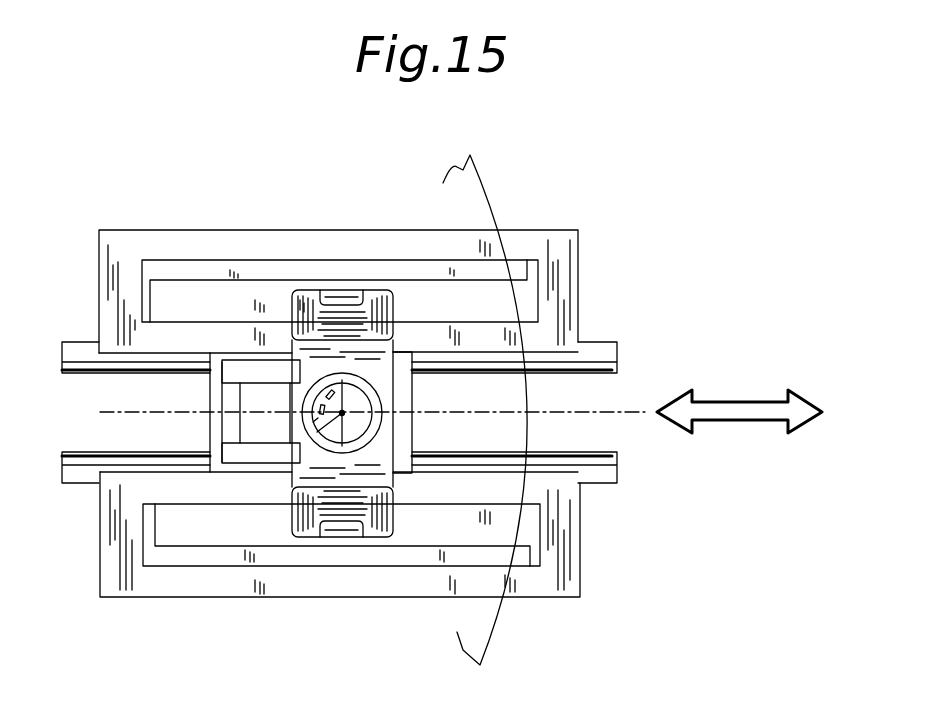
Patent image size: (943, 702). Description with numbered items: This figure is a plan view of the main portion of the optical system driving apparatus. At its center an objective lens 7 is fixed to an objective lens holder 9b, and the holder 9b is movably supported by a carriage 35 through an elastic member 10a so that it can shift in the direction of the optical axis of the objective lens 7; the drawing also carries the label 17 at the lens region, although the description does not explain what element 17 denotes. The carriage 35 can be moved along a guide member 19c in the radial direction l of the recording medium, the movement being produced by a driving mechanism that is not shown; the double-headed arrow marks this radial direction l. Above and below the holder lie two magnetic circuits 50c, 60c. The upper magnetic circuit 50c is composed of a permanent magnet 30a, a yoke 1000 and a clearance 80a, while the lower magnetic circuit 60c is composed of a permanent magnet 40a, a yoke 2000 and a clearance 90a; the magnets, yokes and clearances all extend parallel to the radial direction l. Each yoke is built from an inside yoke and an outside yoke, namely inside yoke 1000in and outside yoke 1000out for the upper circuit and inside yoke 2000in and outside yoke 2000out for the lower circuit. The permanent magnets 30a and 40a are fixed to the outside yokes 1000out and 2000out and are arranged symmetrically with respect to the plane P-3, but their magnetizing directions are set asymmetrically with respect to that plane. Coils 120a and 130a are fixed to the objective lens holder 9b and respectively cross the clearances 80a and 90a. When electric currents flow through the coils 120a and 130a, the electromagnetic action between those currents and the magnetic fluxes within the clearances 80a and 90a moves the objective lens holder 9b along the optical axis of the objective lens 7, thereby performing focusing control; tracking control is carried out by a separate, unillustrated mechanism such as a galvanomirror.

The magnetic circuit 50c is at (314, 211).
The permanent magnet 30a is at (272, 270).
The clearance 80a is at (418, 305).
The yoke 1000 is at (690, 188).
The outside yoke 1000out is at (487, 247).
The inside yoke 1000in is at (493, 337).
The magnetic circuit 60c is at (298, 606).
The permanent magnet 40a is at (233, 555).
The clearance 90a is at (437, 533).
The yoke 2000 is at (710, 503).
The inside yoke 2000in is at (502, 505).
The outside yoke 2000out is at (503, 583).
The guide member 19c is at (82, 352).
The plane P-3 is at (103, 412).
The carriage 35 is at (218, 402).
The elastic member 10a is at (247, 370).
The objective lens holder 9b is at (384, 352).
The coil 120a is at (361, 290).
The coil 130a is at (382, 535).
The objective lens 7 is at (380, 402).
The bearing ring 17 is at (372, 441).
The radial direction l is at (750, 415).